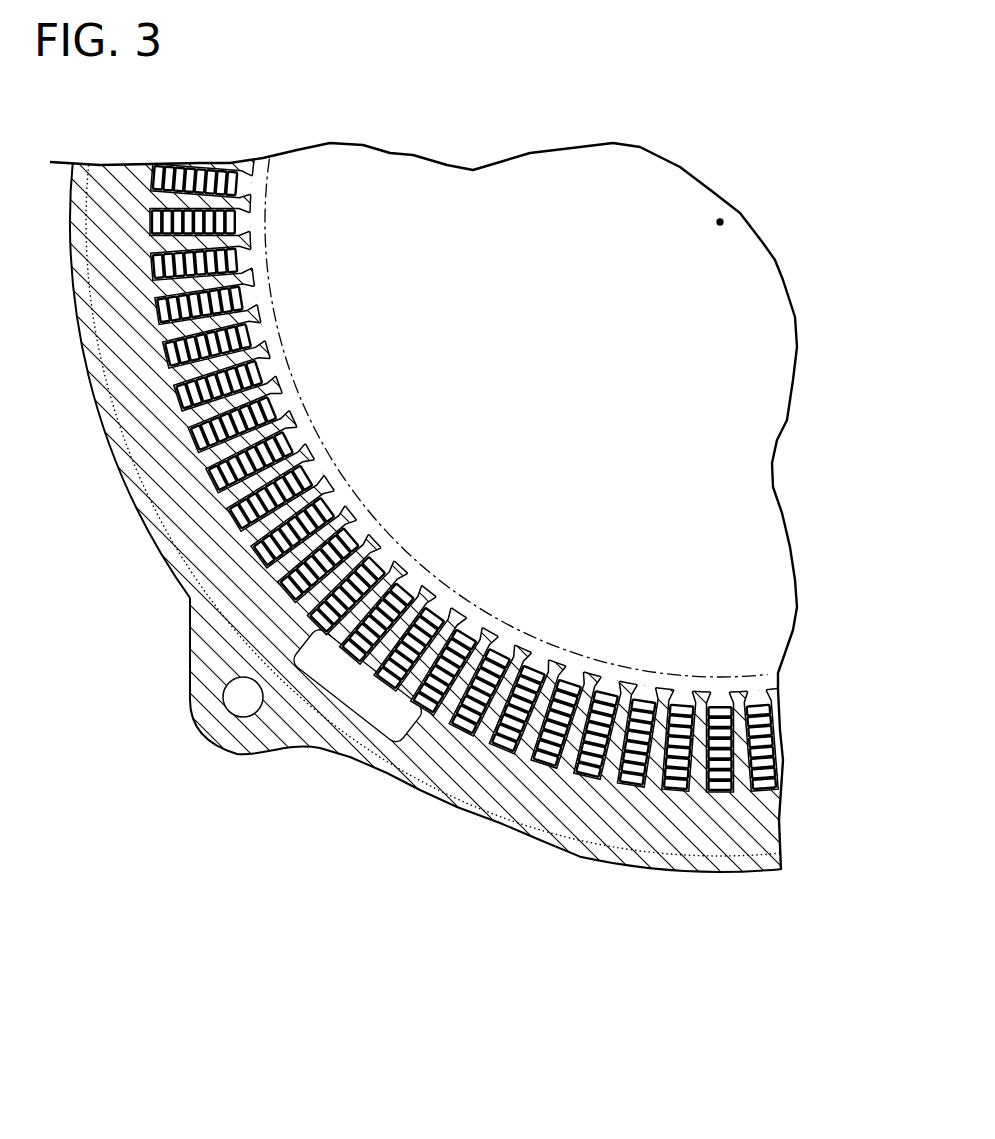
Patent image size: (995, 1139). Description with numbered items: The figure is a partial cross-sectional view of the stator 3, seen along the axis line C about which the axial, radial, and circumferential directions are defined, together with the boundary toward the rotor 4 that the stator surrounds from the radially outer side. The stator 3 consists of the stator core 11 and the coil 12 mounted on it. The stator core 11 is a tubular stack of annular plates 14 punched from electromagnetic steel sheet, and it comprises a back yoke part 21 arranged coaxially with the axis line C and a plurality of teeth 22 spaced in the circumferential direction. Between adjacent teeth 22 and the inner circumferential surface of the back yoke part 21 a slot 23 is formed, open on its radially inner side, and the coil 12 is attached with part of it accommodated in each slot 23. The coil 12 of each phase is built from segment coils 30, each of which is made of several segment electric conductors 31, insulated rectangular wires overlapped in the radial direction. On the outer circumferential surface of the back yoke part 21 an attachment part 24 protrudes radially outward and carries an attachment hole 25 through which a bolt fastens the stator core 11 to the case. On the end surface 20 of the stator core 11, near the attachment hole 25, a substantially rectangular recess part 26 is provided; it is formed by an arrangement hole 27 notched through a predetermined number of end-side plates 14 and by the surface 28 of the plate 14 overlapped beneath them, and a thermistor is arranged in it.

The stator 3 is at (497, 569).
The rotor 4 is at (496, 632).
The axis line C is at (717, 228).
The stator core 11 is at (497, 569).
The coil 12 is at (471, 558).
The plate 14 is at (71, 237).
The end surface 20 is at (496, 828).
The back yoke part 21 is at (565, 838).
The teeth 22 is at (252, 261).
The slot 23 is at (724, 770).
The attachment part 24 is at (205, 740).
The attachment hole 25 is at (233, 702).
The recess part 26 is at (352, 864).
The arrangement hole 27 is at (360, 710).
The surface of the plate 28 is at (340, 688).
The segment coil 30 is at (680, 694).
The segment electric conductor 31 is at (705, 592).